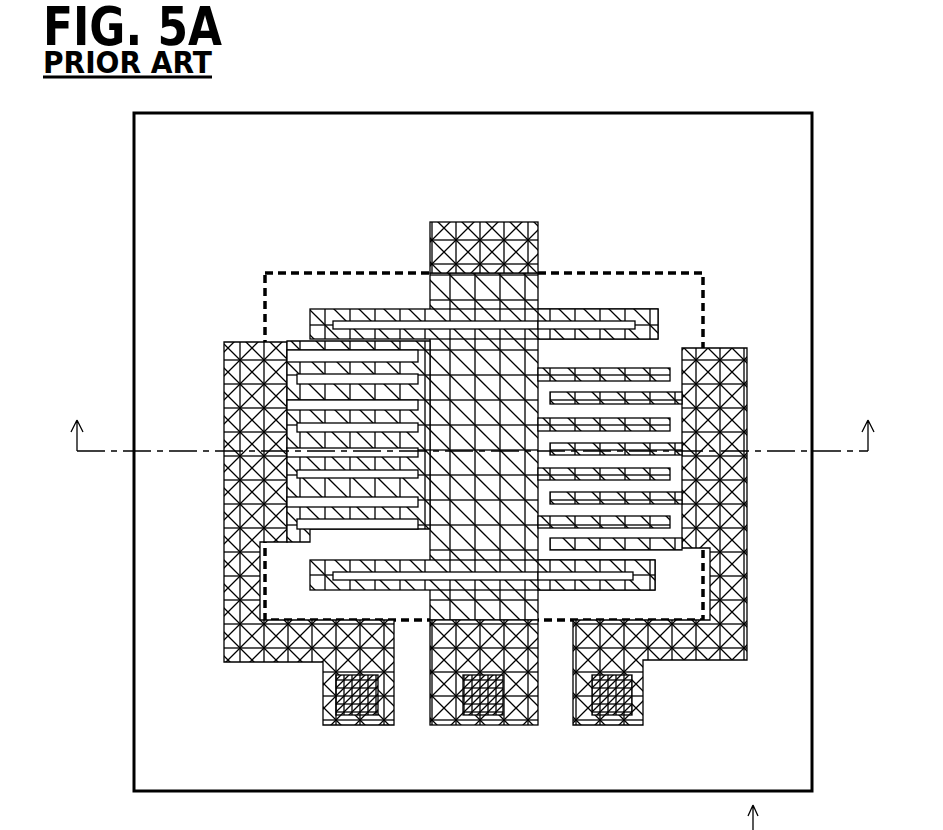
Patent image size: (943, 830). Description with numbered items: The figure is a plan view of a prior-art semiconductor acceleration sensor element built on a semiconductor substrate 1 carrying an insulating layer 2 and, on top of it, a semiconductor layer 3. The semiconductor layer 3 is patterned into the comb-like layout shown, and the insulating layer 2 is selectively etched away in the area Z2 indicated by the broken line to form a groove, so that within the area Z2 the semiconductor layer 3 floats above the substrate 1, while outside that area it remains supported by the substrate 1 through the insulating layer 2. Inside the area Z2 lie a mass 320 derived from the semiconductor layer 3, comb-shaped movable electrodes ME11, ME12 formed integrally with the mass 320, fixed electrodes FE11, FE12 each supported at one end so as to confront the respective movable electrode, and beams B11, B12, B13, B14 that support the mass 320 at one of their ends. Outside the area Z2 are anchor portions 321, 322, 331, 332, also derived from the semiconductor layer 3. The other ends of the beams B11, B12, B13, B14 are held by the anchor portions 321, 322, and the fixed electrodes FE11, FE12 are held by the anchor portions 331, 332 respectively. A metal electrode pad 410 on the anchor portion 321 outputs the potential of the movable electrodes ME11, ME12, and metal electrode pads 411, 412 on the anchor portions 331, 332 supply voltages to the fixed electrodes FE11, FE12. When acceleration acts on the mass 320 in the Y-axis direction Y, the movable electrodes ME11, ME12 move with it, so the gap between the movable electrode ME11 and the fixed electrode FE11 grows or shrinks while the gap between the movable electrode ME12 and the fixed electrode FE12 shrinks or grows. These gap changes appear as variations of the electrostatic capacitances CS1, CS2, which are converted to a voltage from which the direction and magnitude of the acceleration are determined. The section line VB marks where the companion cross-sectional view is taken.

The semiconductor substrate 1 is at (133, 772).
The insulating layer 2 is at (161, 701).
The semiconductor layer 3 is at (251, 259).
The mass 320 is at (540, 355).
The anchor portion 321 is at (522, 727).
The anchor portion 322 is at (443, 222).
The anchor portion 331 is at (224, 378).
The anchor portion 332 is at (747, 395).
The electrode pad 410 is at (478, 727).
The electrode pad 411 is at (347, 727).
The electrode pad 412 is at (602, 727).
The beam B11 is at (368, 309).
The beam B12 is at (600, 309).
The beam B13 is at (358, 592).
The beam B14 is at (688, 662).
The movable electrode ME11 is at (300, 538).
The movable electrode ME12 is at (670, 370).
The fixed electrode FE11 is at (307, 345).
The fixed electrode FE12 is at (665, 550).
The electrostatic capacitance CS1 is at (314, 549).
The electrostatic capacitance CS2 is at (663, 359).
The area Z2 is at (702, 316).
The line VB- VB is at (472, 417).
The Y-axis direction Y is at (745, 813).